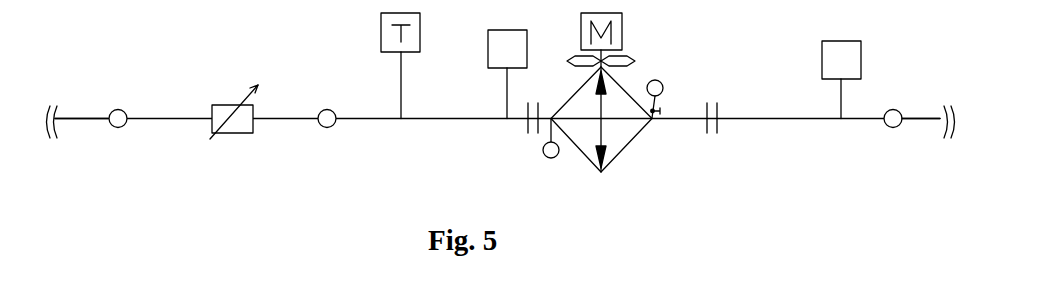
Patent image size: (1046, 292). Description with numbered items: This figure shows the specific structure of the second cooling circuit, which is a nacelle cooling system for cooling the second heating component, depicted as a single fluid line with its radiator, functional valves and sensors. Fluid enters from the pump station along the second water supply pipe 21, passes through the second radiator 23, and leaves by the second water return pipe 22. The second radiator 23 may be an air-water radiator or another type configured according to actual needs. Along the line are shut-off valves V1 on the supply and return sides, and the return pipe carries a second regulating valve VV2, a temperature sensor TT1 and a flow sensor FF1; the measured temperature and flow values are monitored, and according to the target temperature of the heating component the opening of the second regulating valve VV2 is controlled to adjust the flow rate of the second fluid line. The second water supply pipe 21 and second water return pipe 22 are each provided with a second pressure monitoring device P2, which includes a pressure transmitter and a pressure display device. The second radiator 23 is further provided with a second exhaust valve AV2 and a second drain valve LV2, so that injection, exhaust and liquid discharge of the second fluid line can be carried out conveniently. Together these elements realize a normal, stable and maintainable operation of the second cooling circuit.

The second water supply pipe 21 is at (938, 118).
The second water return pipe 22 is at (70, 118).
The second radiator 23 is at (623, 88).
The shut-off valve V1 is at (123, 127).
The adjustable flow restrictor FF1 is at (233, 128).
The second regulating valve VV2 is at (323, 111).
The temperature sensor TT1 is at (400, 88).
The second pressure monitoring device P2 is at (505, 99).
The second exhaust valve AV2 is at (663, 84).
The second drain valve LV2 is at (545, 157).